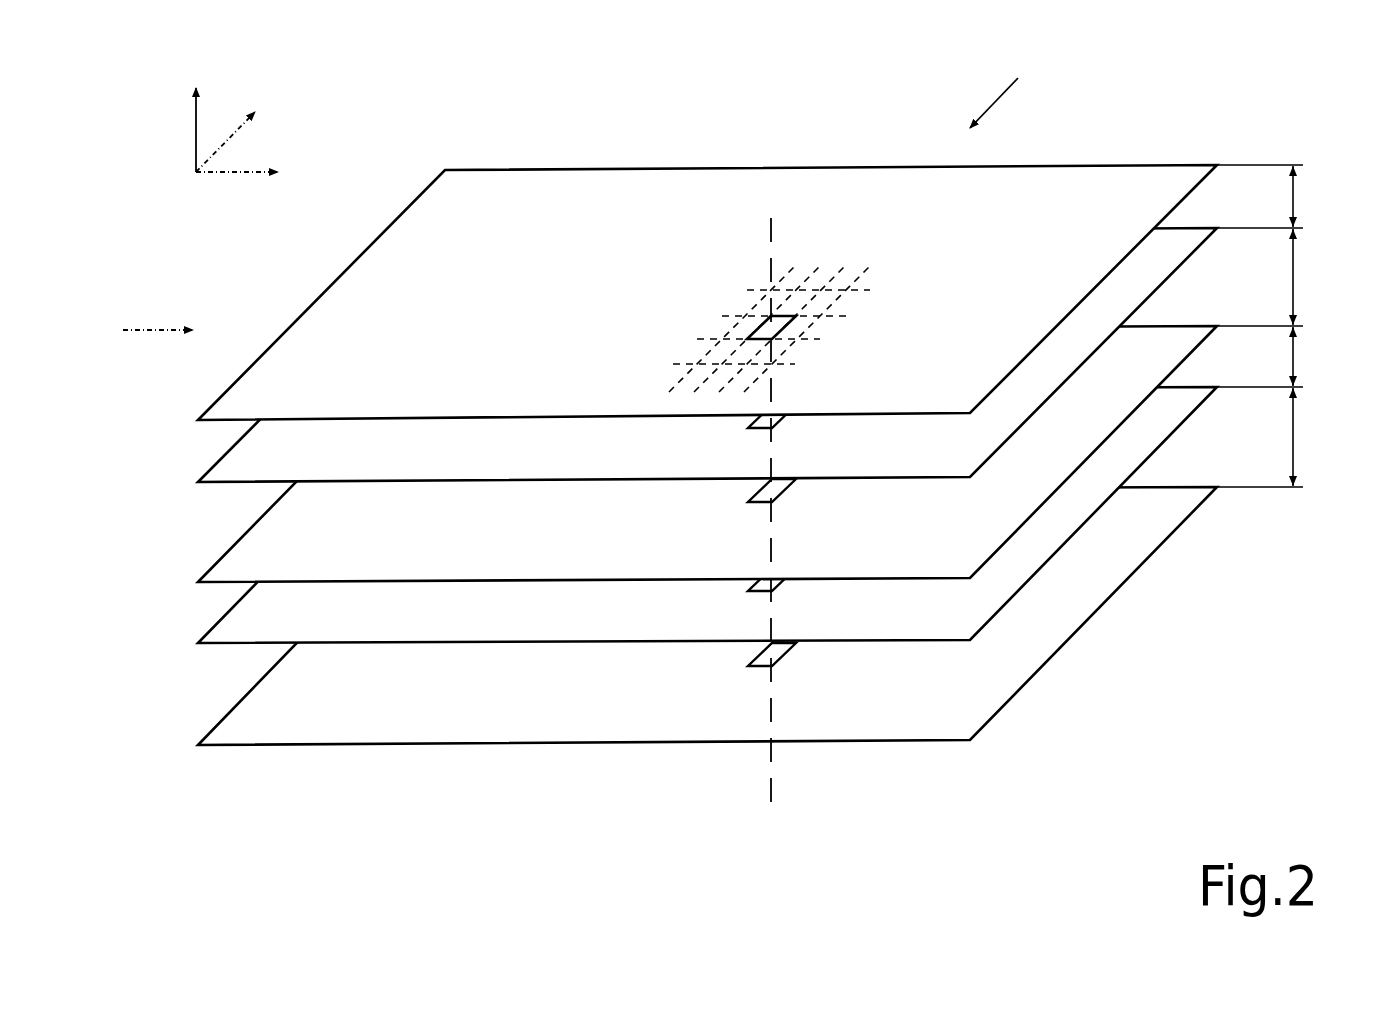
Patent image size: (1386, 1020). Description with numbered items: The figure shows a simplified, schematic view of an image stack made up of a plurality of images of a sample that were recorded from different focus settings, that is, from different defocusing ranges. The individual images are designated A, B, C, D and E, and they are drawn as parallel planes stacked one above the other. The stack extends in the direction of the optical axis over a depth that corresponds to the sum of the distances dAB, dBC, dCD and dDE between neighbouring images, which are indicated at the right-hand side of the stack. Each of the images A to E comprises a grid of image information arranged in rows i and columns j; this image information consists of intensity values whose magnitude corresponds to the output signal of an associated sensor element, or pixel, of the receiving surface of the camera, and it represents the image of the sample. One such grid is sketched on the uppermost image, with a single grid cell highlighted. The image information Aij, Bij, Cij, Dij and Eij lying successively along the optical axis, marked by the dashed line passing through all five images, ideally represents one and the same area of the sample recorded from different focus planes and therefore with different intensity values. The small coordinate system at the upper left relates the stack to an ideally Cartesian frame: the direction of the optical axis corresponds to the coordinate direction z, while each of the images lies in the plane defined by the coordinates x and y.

The image A is at (243, 398).
The image B is at (240, 468).
The image C is at (247, 560).
The image D is at (250, 629).
The image E is at (263, 717).
The image information Aij is at (790, 333).
The image information Bij is at (778, 423).
The image information Cij is at (780, 497).
The image information Dij is at (780, 587).
The image information Eij is at (783, 657).
The distance dAB is at (1331, 196).
The distance dBC is at (1331, 277).
The distance dCD is at (1333, 356).
The distance dDE is at (1332, 437).
The rows i is at (1000, 84).
The columns j is at (148, 321).
The coordinate X x is at (250, 173).
The coordinate Y y is at (239, 130).
The coordinate direction Z z is at (193, 113).